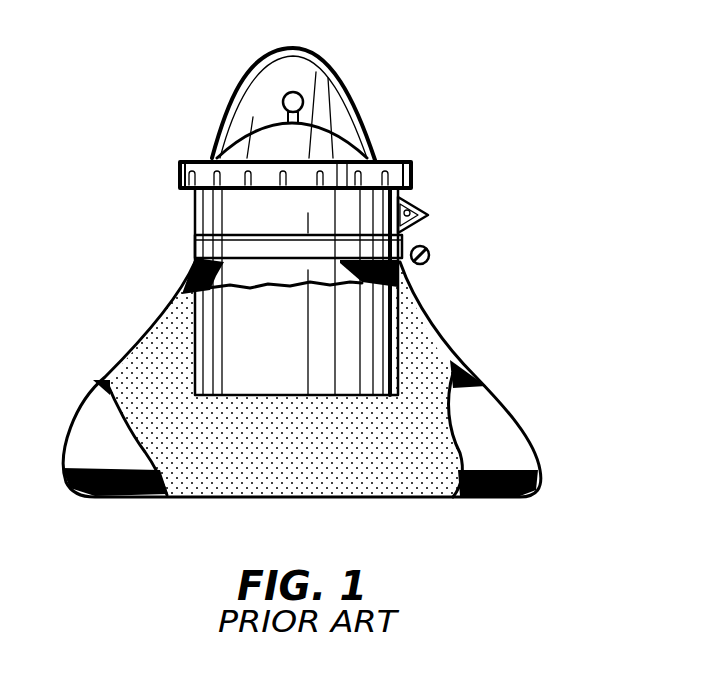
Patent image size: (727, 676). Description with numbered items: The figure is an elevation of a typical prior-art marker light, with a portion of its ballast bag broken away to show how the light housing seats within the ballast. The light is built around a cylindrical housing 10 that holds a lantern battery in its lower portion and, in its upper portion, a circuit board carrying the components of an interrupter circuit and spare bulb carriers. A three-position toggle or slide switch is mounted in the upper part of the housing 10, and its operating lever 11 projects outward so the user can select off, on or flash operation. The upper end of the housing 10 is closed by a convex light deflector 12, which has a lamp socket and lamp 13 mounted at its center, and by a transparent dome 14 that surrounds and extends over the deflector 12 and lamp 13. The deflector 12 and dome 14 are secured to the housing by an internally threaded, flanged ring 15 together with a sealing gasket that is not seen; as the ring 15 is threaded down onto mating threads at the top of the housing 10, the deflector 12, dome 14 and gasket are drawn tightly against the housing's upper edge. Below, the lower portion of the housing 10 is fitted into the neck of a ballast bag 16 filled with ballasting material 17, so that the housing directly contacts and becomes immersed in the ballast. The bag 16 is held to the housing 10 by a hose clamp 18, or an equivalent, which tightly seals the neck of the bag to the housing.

The cylindrical housing 10 is at (197, 203).
The operating lever 11 is at (422, 208).
The convex light deflector 12 is at (365, 145).
The lamp 13 is at (303, 100).
The transparent dome 14 is at (330, 58).
The flanged ring 15 is at (413, 168).
The ballast bag 16 is at (428, 340).
The weighted filler 17 is at (230, 470).
The hose clamp 18 is at (432, 257).